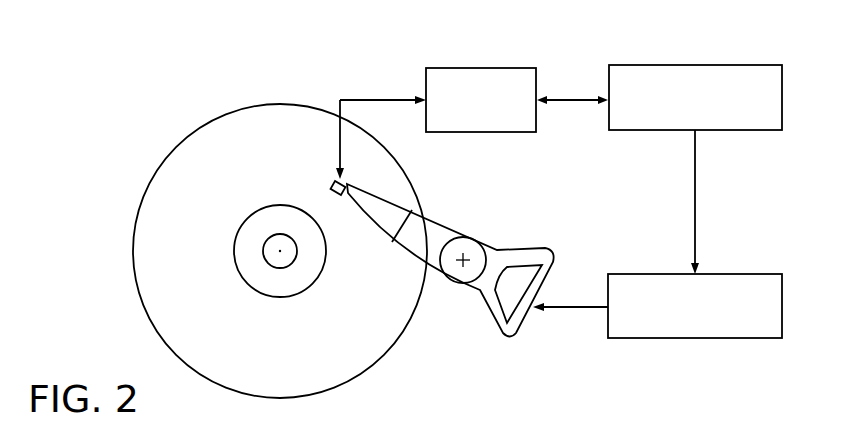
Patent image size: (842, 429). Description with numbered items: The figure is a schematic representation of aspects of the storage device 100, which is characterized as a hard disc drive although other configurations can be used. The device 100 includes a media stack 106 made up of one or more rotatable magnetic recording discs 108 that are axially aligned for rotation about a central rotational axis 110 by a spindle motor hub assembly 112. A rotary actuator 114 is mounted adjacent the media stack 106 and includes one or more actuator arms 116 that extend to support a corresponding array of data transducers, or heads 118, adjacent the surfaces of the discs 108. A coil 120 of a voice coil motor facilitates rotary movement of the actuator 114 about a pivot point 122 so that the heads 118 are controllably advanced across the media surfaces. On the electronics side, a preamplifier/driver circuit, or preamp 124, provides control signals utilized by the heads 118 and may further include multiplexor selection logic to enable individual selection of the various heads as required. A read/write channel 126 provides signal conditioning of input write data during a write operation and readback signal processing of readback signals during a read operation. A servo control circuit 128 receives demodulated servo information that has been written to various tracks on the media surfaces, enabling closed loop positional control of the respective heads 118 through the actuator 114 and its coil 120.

The storage device 100 is at (138, 65).
The media stack 106 is at (155, 297).
The rotatable magnetic recording media (discs) 108 is at (380, 338).
The central rotational axis 110 is at (279, 250).
The spindle motor hub assembly 112 is at (252, 272).
The rotary actuator 114 is at (499, 219).
The actuator arm 116 is at (420, 222).
The data transducer (head) 118 is at (333, 180).
The coil 120 is at (545, 250).
The pivot point 122 is at (457, 263).
The preamplifier/driver circuit (preamp) 124 is at (482, 67).
The read/write channel 126 is at (695, 65).
The servo control circuit 128 is at (730, 273).